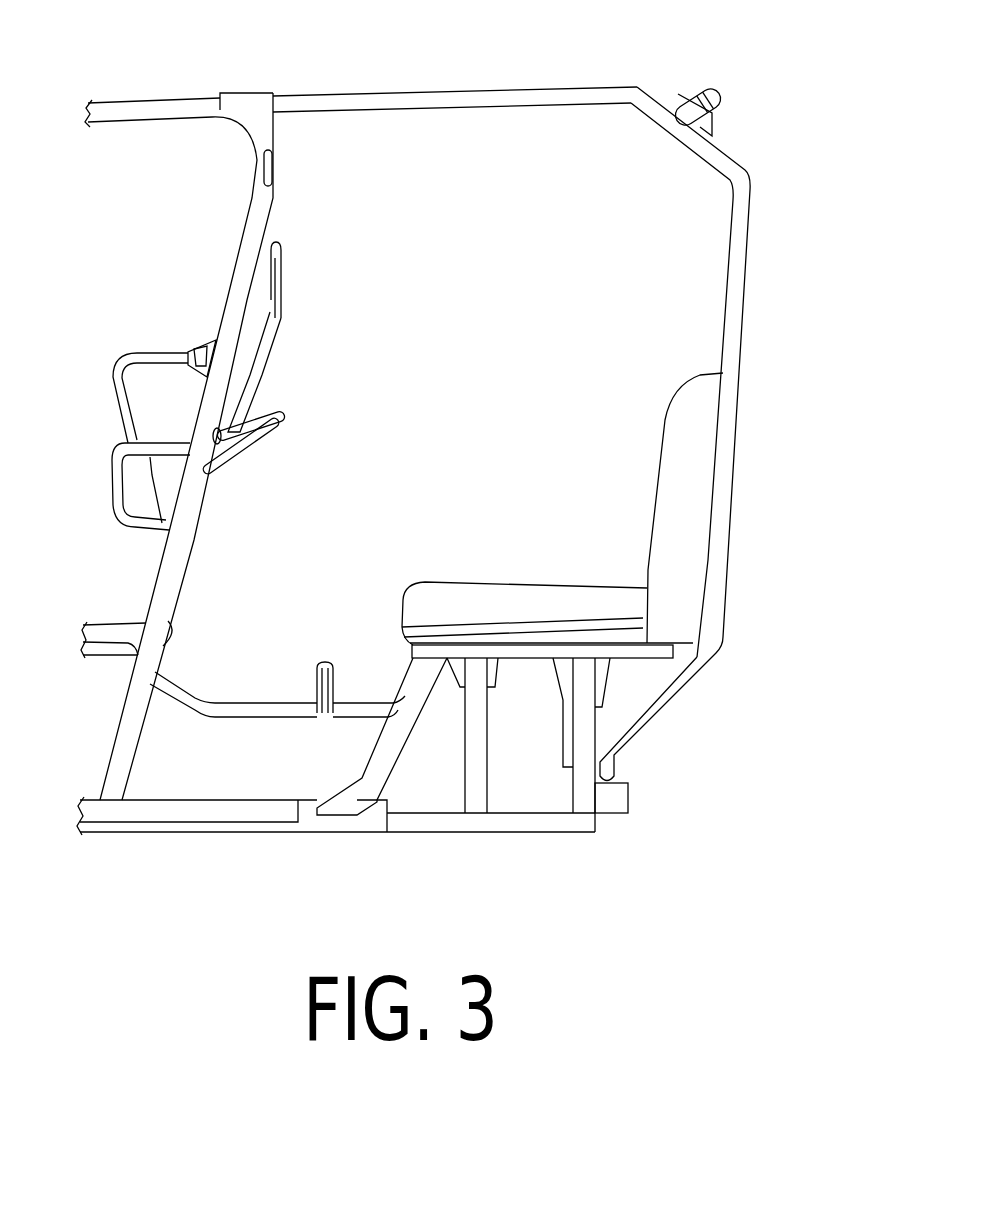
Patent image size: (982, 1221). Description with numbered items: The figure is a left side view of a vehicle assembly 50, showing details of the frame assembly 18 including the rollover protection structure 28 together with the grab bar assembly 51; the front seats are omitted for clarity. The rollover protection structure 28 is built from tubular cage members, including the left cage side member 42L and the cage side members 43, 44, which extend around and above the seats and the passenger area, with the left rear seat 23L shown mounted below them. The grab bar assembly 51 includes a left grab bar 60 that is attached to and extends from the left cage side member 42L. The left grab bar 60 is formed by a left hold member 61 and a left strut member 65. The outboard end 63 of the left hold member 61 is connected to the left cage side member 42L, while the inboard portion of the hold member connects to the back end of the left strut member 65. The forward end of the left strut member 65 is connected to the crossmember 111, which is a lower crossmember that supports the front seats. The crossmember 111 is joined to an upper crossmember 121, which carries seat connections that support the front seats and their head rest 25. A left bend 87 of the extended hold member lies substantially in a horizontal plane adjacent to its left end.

The frame assembly 18 is at (453, 400).
The rollover protection structure 28 is at (459, 75).
The cage side member 44 is at (357, 95).
The left cage side member 42L is at (270, 208).
The cage side member 43 is at (748, 270).
The head rest 25 is at (282, 268).
The crossmember 121 is at (277, 322).
The left strut member 65 is at (255, 404).
The vehicle assembly 50 is at (187, 318).
The crossmember 111 is at (192, 442).
The left bend 87 is at (292, 417).
The left hold member 61 is at (272, 428).
The left grab bar 60 is at (308, 427).
The outboard end 63 is at (221, 458).
The grab bar assembly 51 is at (282, 460).
The rear seat 23L is at (514, 592).